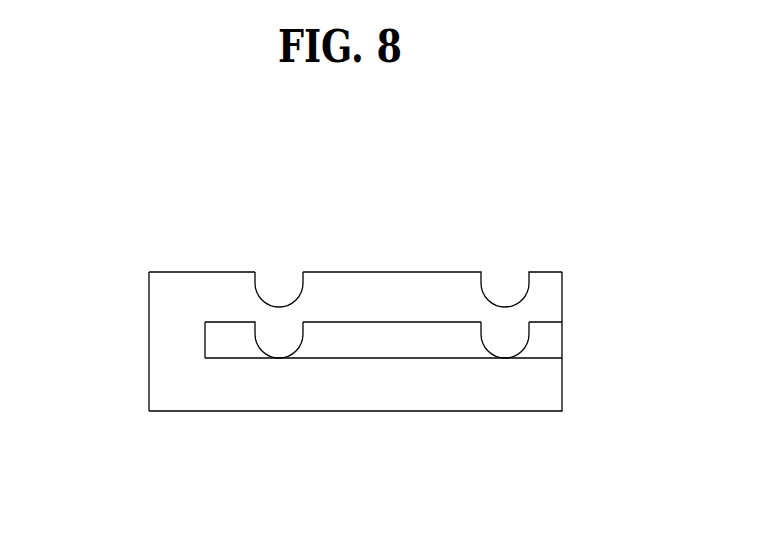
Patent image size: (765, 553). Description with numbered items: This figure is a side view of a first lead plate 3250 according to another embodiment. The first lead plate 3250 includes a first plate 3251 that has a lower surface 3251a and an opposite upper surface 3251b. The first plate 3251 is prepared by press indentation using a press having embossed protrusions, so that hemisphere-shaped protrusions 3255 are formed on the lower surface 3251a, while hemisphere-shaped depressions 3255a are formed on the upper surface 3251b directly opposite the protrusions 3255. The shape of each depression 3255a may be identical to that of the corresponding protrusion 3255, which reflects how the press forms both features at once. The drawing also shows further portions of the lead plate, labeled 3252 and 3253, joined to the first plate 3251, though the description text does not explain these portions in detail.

The first lead plate 3250 is at (602, 211).
The first plate 3251 is at (362, 283).
The lower surface 3251a is at (440, 322).
The upper surface 3251b is at (195, 272).
The side wall 3252 is at (167, 335).
The base plate 3253 is at (287, 397).
The protrusion 3255 is at (508, 347).
The depression 3255a is at (280, 270).